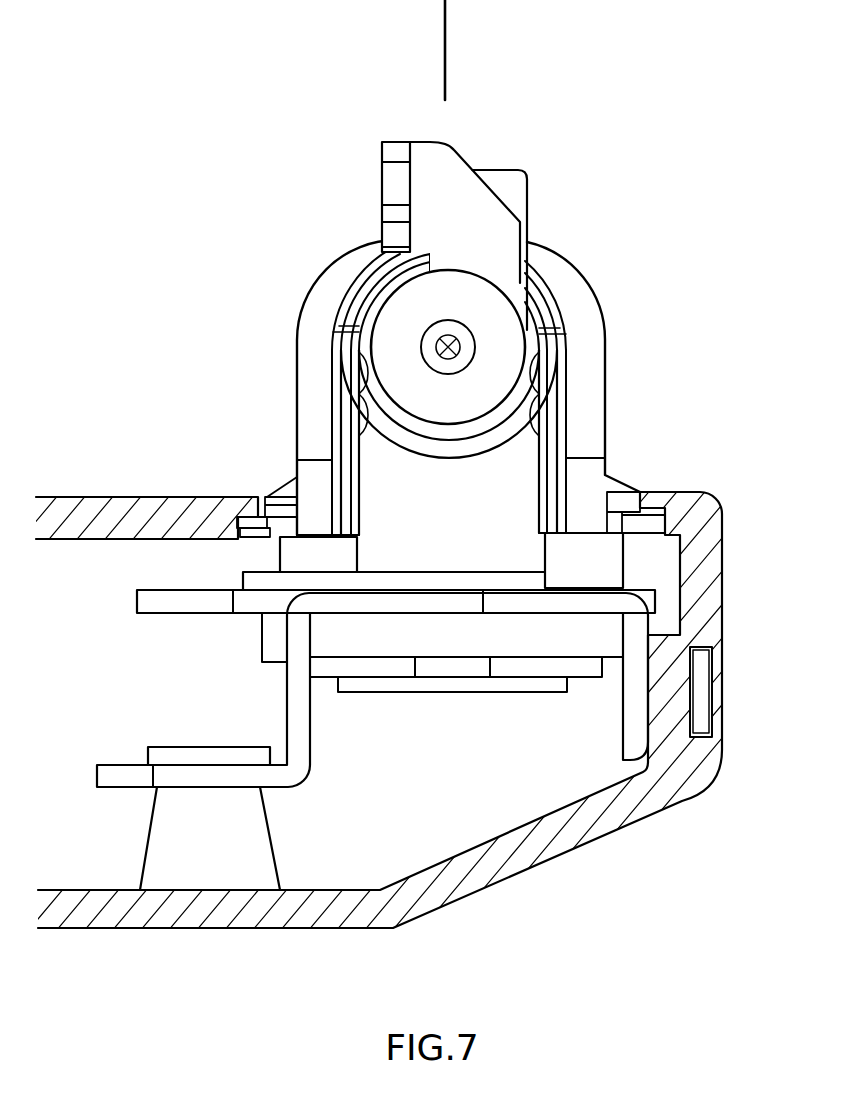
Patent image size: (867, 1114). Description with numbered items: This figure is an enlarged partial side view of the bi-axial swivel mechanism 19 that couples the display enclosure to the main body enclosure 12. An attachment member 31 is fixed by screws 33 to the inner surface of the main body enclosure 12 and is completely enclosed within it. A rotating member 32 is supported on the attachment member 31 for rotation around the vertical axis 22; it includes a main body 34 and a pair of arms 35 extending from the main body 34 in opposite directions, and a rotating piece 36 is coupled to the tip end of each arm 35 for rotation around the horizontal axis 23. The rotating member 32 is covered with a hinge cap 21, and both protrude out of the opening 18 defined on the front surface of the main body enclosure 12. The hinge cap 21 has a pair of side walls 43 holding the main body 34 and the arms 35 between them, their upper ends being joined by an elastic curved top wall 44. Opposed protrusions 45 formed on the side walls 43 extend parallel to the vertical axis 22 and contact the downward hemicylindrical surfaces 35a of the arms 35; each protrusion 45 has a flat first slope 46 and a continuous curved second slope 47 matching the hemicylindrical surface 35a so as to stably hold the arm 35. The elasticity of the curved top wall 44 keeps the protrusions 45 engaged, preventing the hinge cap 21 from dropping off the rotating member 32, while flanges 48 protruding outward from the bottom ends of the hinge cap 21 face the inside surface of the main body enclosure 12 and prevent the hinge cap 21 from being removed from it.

The main body enclosure 12 is at (90, 494).
The opening 18 is at (265, 496).
The swivel mechanism 19 is at (632, 292).
The hinge cap 21 is at (582, 258).
The vertical axis 22 is at (445, 48).
The horizontal axis 23 is at (455, 338).
The attachment member 31 is at (140, 597).
The rotating member 32 is at (378, 319).
The screw 33 is at (148, 746).
The main body 34 is at (547, 542).
The arm 35 is at (479, 460).
The hemicylindrical surface 35a is at (392, 432).
The rotating piece 36 is at (453, 152).
The side wall 43 is at (331, 353).
The curved top wall 44 is at (366, 242).
The protrusion 45 is at (354, 392).
The first slope 46 is at (358, 420).
The second slope 47 is at (358, 332).
The flange 48 is at (223, 520).